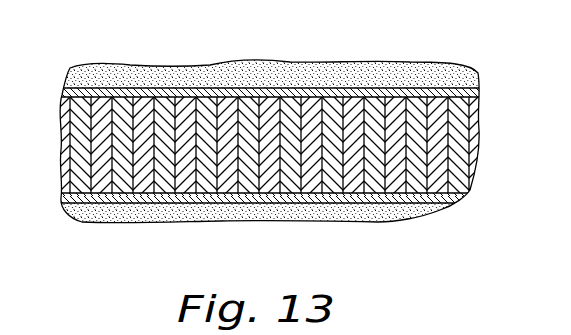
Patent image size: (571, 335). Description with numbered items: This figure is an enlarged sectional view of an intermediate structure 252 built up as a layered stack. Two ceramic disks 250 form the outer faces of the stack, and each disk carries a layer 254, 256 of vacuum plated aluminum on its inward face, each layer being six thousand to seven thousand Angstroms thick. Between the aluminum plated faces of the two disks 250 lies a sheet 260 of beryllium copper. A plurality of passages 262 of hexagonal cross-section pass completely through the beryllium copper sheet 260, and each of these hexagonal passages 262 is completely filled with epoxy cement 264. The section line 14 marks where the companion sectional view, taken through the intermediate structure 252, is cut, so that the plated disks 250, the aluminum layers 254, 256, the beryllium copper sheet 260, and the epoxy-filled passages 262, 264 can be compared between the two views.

The section line 14 is at (77, 120).
The ceramic disk 250 is at (176, 67).
The intermediate structure 252 is at (276, 153).
The layer 254 is at (386, 88).
The layer 256 is at (376, 222).
The sheet of beryllium copper 260 is at (170, 205).
The passage 262 is at (355, 118).
The epoxy cement 264 is at (395, 167).